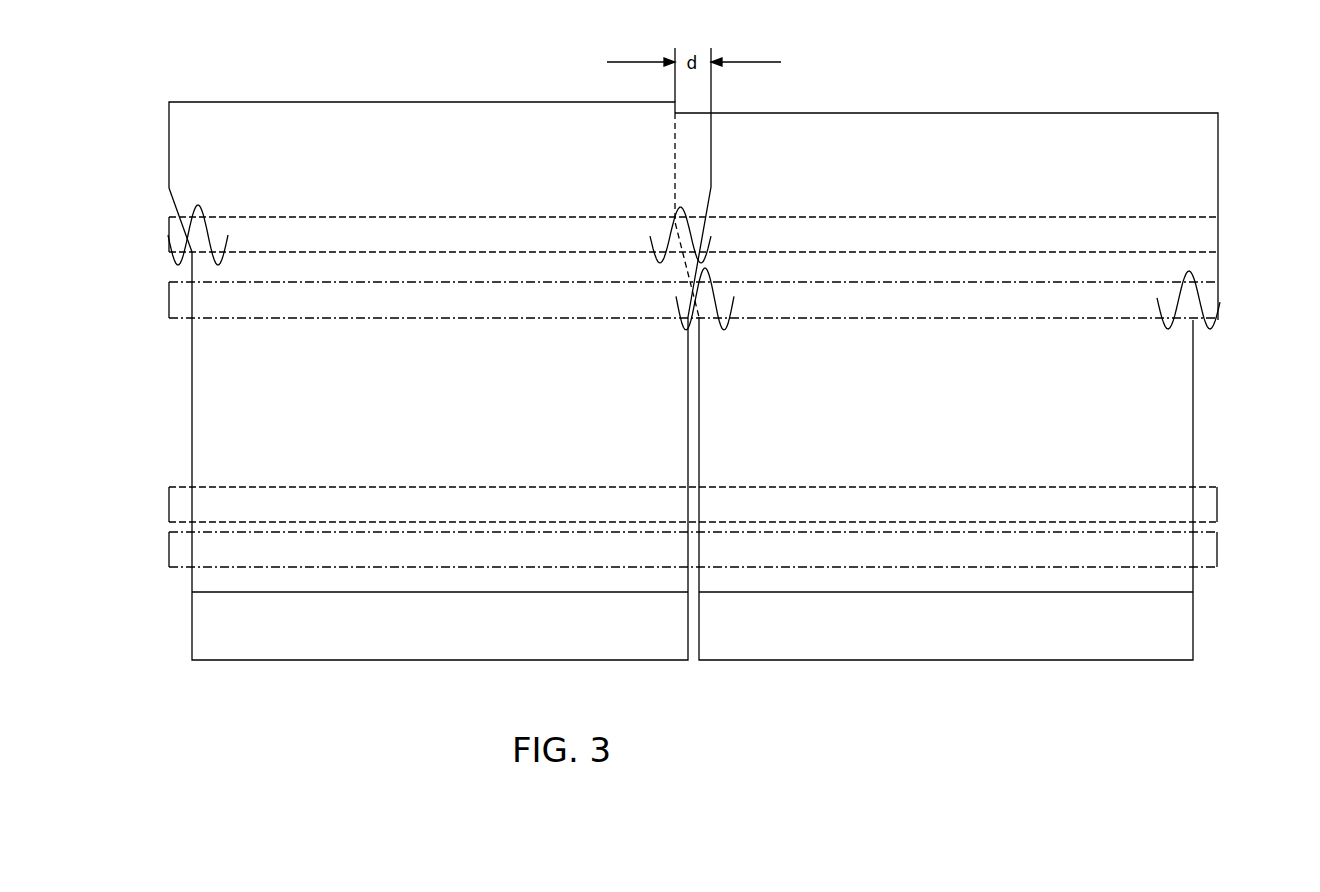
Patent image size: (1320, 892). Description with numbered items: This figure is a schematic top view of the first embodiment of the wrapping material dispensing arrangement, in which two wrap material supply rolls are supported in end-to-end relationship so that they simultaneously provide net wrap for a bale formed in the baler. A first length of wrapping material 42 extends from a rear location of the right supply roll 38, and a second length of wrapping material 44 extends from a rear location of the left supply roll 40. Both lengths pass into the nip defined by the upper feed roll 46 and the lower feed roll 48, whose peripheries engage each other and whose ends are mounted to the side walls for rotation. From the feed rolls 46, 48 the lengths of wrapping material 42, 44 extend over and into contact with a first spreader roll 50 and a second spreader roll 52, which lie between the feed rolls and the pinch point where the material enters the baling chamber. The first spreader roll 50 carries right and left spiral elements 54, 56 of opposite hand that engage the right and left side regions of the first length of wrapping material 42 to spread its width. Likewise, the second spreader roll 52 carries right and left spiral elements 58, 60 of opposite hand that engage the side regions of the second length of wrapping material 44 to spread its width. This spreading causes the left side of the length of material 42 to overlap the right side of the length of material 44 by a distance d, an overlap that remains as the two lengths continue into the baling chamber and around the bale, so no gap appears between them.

The right wrapping material supply roll 38 is at (745, 661).
The left wrapping material supply roll 40 is at (255, 661).
The first length of wrapping material 42 is at (818, 113).
The second length of wrapping material 44 is at (268, 101).
The upper feed roll 46 is at (1218, 545).
The lower feed roll 48 is at (1218, 505).
The first spreader roll 50 is at (1219, 290).
The second spreader roll 52 is at (1193, 217).
The right spiral element 54 is at (1166, 329).
The left spiral element 56 is at (728, 322).
The right spiral element 58 is at (683, 207).
The left spiral element 60 is at (199, 205).